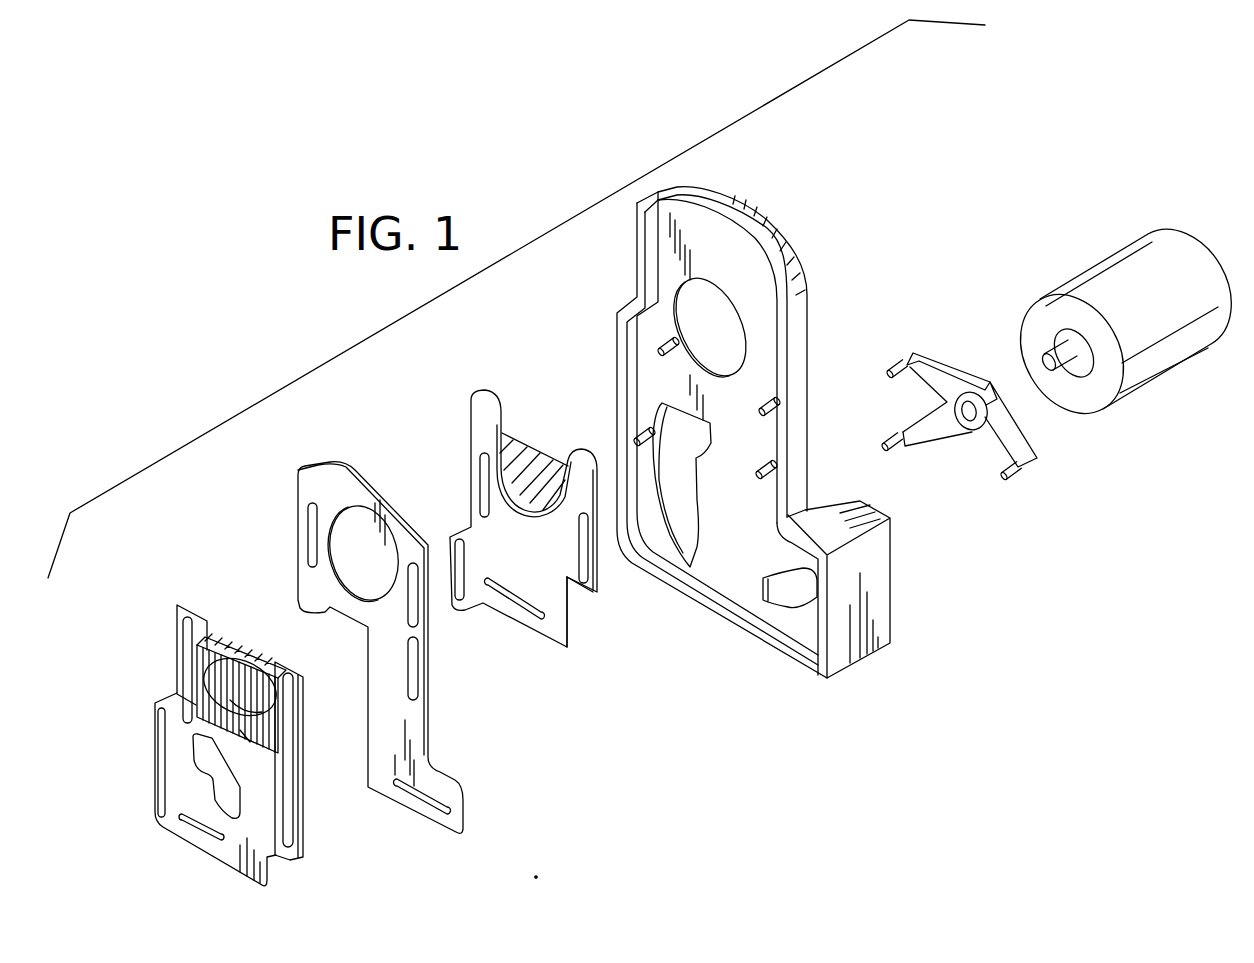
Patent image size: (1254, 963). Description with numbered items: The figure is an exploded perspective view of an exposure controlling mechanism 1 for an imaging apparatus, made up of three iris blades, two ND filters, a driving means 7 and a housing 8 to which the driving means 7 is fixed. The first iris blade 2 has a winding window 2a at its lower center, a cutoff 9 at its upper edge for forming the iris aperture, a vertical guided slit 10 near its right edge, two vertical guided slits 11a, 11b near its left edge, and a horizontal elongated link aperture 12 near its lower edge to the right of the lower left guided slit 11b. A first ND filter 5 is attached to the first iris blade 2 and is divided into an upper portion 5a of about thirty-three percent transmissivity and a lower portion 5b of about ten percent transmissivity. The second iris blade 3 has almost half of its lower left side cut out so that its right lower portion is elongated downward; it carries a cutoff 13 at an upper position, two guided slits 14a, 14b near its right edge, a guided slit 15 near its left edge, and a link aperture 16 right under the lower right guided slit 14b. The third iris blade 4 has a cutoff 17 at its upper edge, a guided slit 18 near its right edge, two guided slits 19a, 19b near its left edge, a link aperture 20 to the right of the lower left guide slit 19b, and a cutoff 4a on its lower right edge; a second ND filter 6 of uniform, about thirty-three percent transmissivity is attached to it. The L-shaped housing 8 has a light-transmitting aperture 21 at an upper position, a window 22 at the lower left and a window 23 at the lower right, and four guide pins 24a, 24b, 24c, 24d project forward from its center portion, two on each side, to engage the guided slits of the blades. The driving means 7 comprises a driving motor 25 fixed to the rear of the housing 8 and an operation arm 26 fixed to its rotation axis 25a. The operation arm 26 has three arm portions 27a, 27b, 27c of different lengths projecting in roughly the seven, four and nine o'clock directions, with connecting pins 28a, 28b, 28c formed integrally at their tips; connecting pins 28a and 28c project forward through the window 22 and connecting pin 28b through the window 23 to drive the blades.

The exposure controlling mechanism 1 is at (893, 150).
The first iris blade 2 is at (219, 742).
The window 2a is at (233, 805).
The second iris blade 3 is at (369, 651).
The third iris blade 4 is at (545, 542).
The cutoff 4a is at (585, 612).
The first ND filter 5 is at (274, 663).
The upper portion 5a is at (240, 690).
The lower portion 5b is at (258, 730).
The second ND filter 6 is at (535, 460).
The driving means 7 is at (990, 346).
The housing 8 is at (737, 439).
The cutoff 9 is at (247, 740).
The guided slit 10 is at (300, 840).
The guided slit 11a is at (185, 690).
The guided slit 11b is at (155, 800).
The link aperture 12 is at (190, 830).
The cutoff 13 is at (353, 515).
The guided slit 14a is at (406, 582).
The guided slit 14b is at (418, 672).
The guided slit 15 is at (313, 520).
The link aperture 16 is at (405, 795).
The cutoff 17 is at (552, 452).
The guided slit 18 is at (600, 574).
The guided slit 19a is at (483, 440).
The guided slit 19b is at (465, 498).
The link aperture 20 is at (540, 620).
The light-transmitting aperture 21 is at (718, 302).
The window 22 is at (707, 538).
The window 23 is at (768, 600).
The guide pin 24a is at (660, 345).
The guide pin 24b is at (637, 436).
The guide pin 24c is at (770, 405).
The guide pin 24d is at (770, 470).
The driving motor 25 is at (1115, 299).
The rotation axis 25a is at (1052, 352).
The operation arm 26 is at (990, 368).
The arm portion 27a is at (950, 430).
The arm portion 27b is at (1035, 443).
The arm portion 27c is at (940, 355).
The connecting pin 28a is at (900, 455).
The connecting pin 28b is at (1020, 475).
The connecting pin 28c is at (890, 368).